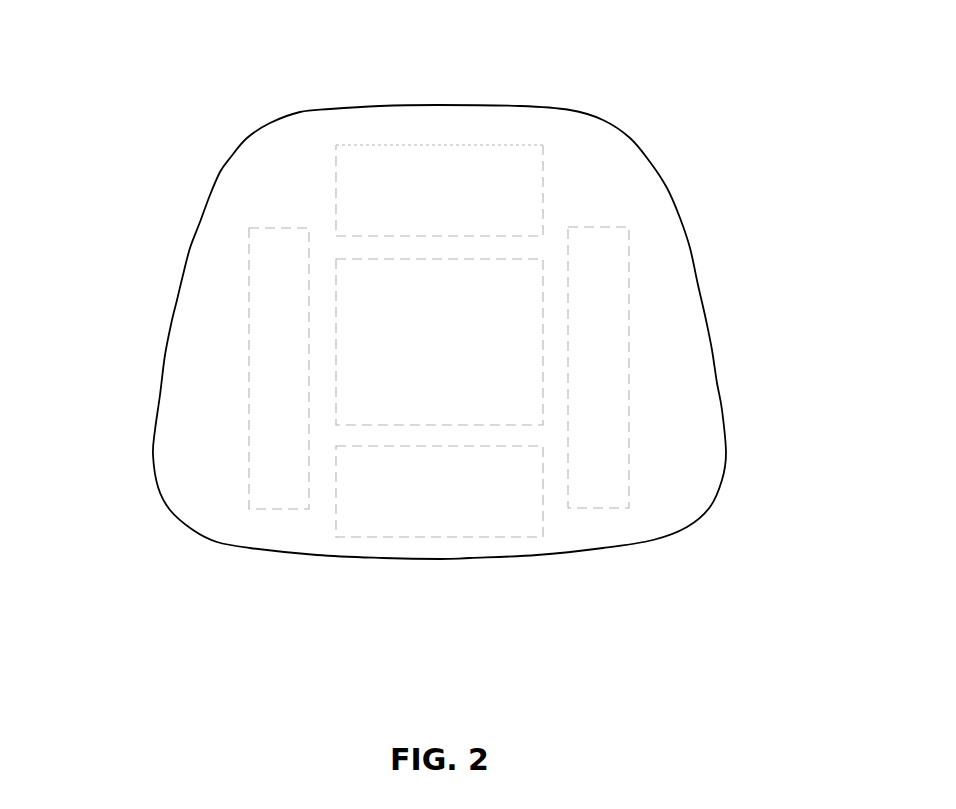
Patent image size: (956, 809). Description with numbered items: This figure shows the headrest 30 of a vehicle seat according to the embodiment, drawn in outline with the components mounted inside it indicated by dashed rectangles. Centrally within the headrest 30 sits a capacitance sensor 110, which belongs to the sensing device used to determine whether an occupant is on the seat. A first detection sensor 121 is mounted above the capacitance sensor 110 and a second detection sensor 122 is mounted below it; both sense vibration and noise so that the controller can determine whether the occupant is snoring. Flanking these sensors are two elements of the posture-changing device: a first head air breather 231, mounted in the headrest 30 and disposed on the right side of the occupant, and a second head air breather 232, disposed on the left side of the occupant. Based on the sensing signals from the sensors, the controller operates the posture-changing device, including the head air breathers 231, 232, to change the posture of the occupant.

The headrest 30 is at (718, 385).
The capacitance sensor 110 is at (336, 385).
The first detection sensor 121 is at (430, 145).
The second detection sensor 122 is at (439, 537).
The first head air breather 231 is at (249, 290).
The second head air breather 232 is at (629, 291).